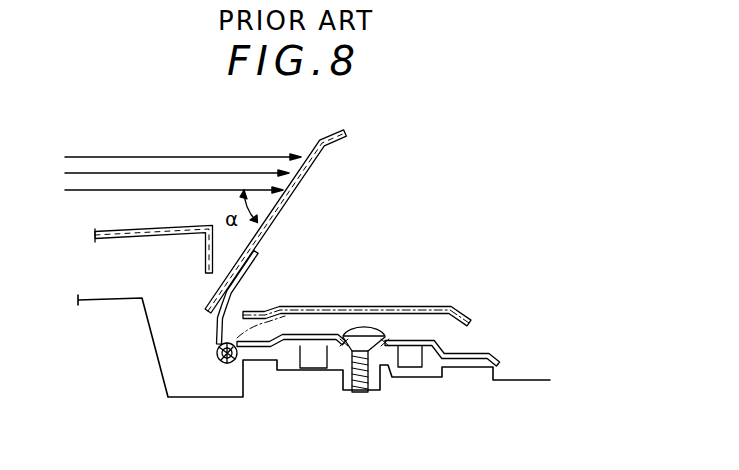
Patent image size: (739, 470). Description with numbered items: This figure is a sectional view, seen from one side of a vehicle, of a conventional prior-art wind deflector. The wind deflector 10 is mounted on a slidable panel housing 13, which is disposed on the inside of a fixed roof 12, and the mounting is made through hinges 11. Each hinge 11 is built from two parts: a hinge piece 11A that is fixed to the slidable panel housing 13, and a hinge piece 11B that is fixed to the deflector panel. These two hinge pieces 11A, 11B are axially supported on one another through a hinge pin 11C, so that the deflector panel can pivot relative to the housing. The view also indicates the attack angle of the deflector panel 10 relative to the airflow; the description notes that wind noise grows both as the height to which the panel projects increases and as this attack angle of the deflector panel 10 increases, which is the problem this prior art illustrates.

The wind deflector 10 is at (302, 167).
The hinge 11 is at (342, 338).
The hinge piece 11A is at (328, 338).
The hinge piece 11B is at (258, 258).
The hinge pin 11C is at (227, 366).
The fixed roof 12 is at (150, 229).
The slidable panel housing 13 is at (495, 382).